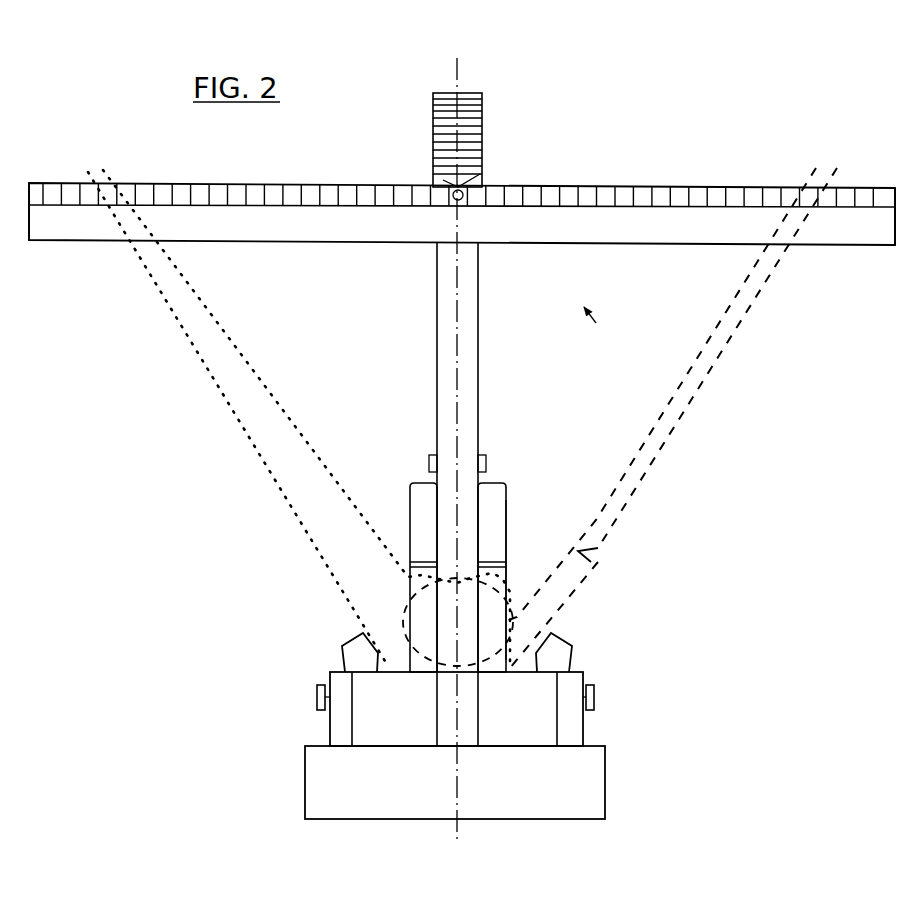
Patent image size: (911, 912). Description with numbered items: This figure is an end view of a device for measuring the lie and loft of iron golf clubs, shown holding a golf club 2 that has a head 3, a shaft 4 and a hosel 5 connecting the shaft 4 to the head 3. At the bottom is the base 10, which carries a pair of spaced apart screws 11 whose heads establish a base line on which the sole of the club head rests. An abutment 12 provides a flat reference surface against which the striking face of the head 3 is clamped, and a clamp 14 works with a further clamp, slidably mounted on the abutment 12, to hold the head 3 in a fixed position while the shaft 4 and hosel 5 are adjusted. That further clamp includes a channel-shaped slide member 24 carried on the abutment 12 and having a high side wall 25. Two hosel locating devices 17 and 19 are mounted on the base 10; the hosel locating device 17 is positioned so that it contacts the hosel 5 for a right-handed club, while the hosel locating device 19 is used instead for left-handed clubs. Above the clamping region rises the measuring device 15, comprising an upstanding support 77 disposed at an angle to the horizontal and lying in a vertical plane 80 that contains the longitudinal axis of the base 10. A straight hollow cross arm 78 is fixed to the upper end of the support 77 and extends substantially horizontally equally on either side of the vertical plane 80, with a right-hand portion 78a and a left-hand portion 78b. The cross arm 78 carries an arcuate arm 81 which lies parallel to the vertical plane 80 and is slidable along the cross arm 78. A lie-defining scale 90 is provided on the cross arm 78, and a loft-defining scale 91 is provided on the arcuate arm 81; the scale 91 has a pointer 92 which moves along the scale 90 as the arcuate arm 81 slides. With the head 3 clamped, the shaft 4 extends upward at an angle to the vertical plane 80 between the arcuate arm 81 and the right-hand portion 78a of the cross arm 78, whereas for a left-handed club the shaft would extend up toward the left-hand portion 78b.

The golf club 2 is at (712, 408).
The head 3 is at (488, 600).
The shaft 4 is at (652, 452).
The hosel 5 is at (558, 606).
The base 10 is at (266, 762).
The spaced apart screws 11 is at (420, 673).
The abutment 12 is at (415, 570).
The clamp 14 is at (523, 492).
The measuring device 15 is at (605, 326).
The hosel locating device 17 is at (574, 727).
The hosel locating device 19 is at (314, 716).
The slide member 24 is at (404, 497).
The high side wall 25 is at (498, 529).
The upstanding support 77 is at (440, 357).
The cross arm 78 is at (386, 236).
The right-hand portion of the cross arm 78a is at (823, 238).
The left-hand portion of the cross arm 78b is at (82, 224).
The vertical plane 80 is at (462, 68).
The arcuate arm 81 is at (482, 128).
The lie-defining scale 90 is at (290, 186).
The loft-defining scale 91 is at (438, 120).
The pointer 92 is at (463, 184).